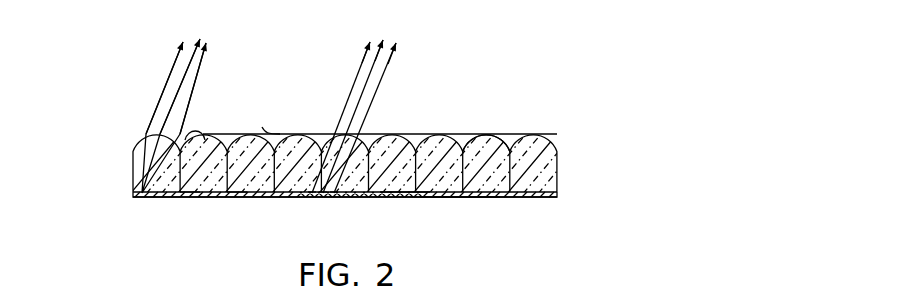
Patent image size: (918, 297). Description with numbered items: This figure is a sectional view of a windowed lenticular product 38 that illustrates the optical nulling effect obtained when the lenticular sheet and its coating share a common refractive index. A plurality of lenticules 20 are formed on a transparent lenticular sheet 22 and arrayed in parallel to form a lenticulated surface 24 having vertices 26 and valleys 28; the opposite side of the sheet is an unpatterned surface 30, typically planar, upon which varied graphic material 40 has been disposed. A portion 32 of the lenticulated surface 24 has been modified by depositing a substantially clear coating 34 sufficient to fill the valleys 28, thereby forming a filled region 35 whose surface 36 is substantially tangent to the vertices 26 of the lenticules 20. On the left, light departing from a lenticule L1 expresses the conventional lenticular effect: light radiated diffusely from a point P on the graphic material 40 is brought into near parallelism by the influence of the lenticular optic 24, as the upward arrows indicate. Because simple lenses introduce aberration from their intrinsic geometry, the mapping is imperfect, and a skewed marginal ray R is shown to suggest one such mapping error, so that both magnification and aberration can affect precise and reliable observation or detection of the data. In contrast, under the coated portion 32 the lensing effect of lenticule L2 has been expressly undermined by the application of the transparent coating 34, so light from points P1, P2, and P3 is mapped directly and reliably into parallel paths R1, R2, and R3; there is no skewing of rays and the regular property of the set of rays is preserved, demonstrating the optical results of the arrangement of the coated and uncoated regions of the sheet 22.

The lenticules 20 is at (137, 140).
The transparent lenticular sheet 22 is at (578, 172).
The lenticulated surface 24 is at (538, 136).
The vertices 26 is at (188, 194).
The valleys 28 is at (239, 194).
The unpatterned surface 30 is at (528, 194).
The portion of the lenticulated surface 32 is at (442, 90).
The substantially clear coating 34 is at (404, 178).
The filled region 35 is at (463, 136).
The surface of the filled region 36 is at (373, 134).
The windowed lenticular product 38 is at (504, 80).
The varied graphic material 40 is at (452, 196).
The point P is at (141, 194).
The point P1 is at (311, 197).
The point P2 is at (318, 198).
The point P3 is at (337, 194).
The skewed marginal ray R is at (190, 98).
The parallel path R1 is at (362, 62).
The parallel path R2 is at (366, 80).
The parallel path R3 is at (371, 100).
The lenticule L1 is at (150, 138).
The lenticule L2 is at (265, 120).